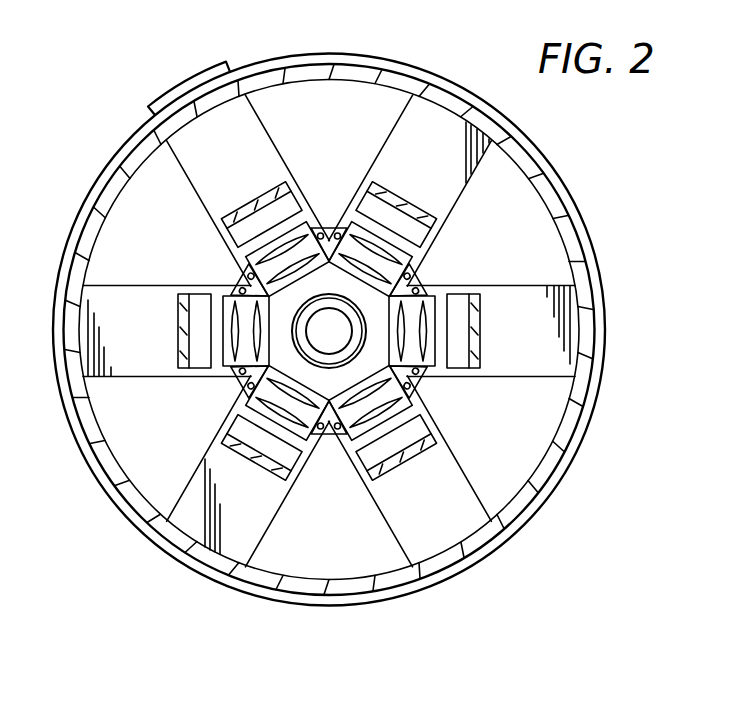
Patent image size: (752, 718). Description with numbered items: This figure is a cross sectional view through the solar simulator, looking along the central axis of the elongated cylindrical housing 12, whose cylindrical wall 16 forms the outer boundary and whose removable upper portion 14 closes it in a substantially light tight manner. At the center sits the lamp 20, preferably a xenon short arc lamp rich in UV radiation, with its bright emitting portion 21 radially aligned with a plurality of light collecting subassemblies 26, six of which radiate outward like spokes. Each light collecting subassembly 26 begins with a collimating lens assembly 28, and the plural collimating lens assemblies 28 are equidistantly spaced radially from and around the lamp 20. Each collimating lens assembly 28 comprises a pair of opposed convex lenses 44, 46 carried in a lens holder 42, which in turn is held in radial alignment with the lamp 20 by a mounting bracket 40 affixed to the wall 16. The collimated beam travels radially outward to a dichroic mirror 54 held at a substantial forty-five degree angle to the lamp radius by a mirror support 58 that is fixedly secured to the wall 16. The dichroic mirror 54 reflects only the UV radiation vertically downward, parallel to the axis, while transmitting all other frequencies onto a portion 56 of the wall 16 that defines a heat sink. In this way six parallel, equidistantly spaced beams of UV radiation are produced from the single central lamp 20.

The housing 12 is at (606, 312).
The upper portion 14 is at (592, 393).
The cylindrical wall 16 is at (565, 438).
The lamp 20 is at (339, 313).
The portion of lamp 21 is at (329, 368).
The light collecting subassembly 26 is at (375, 150).
The collimating lens assembly 28 is at (281, 279).
The mounting bracket 40 is at (215, 158).
The lens holder 42 is at (243, 278).
The convex lens 44 is at (294, 236).
The convex lens 46 is at (327, 230).
The dichroic mirror 54 is at (245, 212).
The portion of wall defining a heat sink 56 is at (184, 80).
The mirror support 58 is at (290, 243).